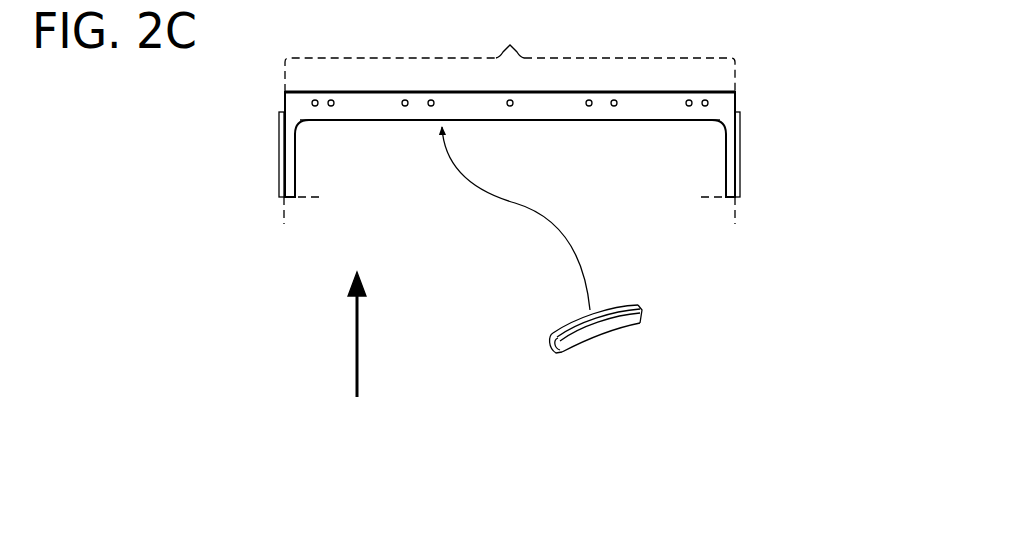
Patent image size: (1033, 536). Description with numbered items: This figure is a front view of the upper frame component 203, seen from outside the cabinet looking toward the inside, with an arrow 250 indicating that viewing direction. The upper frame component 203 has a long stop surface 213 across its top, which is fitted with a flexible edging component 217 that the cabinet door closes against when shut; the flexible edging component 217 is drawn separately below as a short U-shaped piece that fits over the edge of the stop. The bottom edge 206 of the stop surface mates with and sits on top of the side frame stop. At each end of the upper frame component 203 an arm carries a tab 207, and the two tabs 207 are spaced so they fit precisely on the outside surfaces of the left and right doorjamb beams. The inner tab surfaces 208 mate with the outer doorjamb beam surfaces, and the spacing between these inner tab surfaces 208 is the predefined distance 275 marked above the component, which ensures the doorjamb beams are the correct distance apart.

The predefined distance 275 is at (510, 52).
The upper frame component 203 is at (449, 212).
The stop surface 213 is at (555, 120).
The tab 207 is at (279, 140).
The bottom edge 206 is at (327, 194).
The inner tab surface 208 is at (281, 229).
The insertion direction 250 is at (355, 350).
The flexible edging component 217 is at (610, 332).